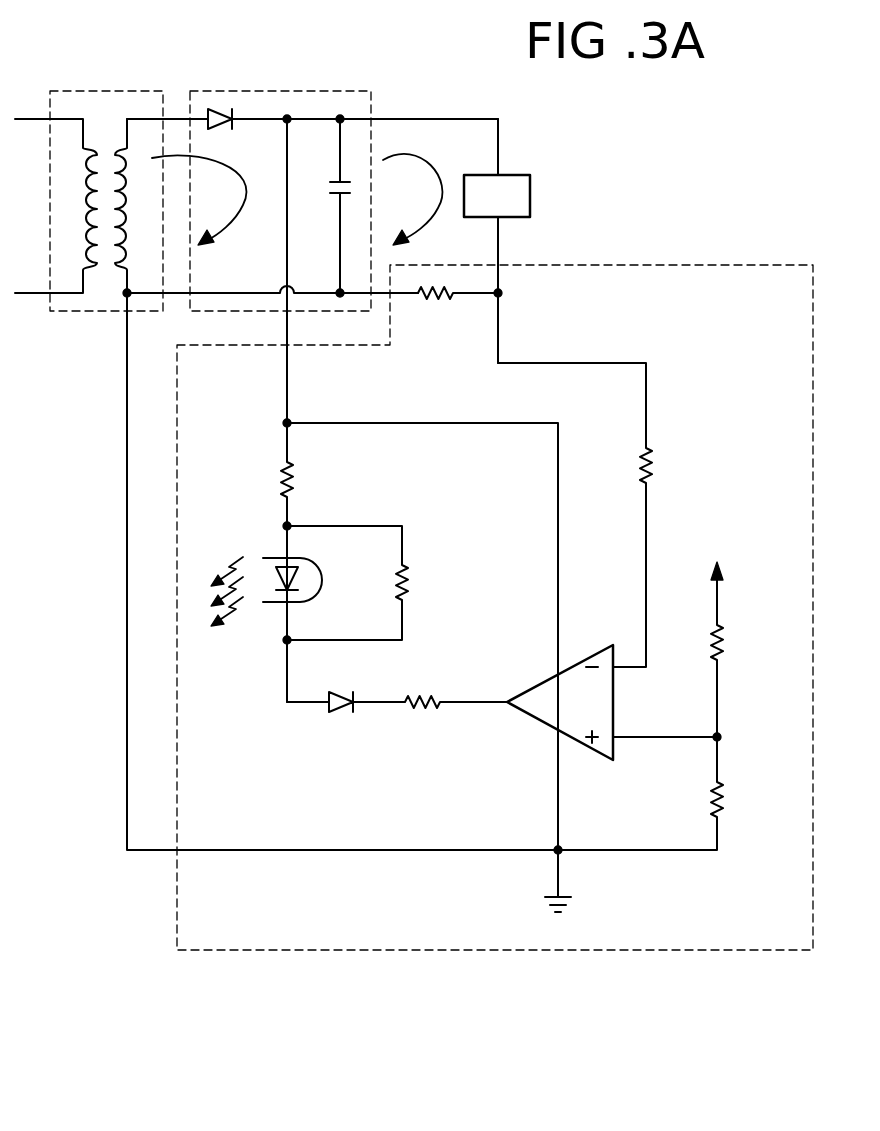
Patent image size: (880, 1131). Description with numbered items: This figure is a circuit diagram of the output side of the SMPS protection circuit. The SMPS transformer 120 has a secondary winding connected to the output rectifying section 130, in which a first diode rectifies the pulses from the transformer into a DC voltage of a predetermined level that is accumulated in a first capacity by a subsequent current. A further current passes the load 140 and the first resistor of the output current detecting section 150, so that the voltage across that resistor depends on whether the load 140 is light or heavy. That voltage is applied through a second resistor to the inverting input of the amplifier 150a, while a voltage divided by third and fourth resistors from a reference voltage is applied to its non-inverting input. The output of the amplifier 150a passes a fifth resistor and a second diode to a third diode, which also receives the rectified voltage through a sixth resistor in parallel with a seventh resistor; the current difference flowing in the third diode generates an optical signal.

The SMPS transformer 120 is at (112, 91).
The output rectifying section 130 is at (287, 91).
The load 140 is at (531, 193).
The output current detecting section 150 is at (470, 571).
The amplifier 150a is at (545, 690).